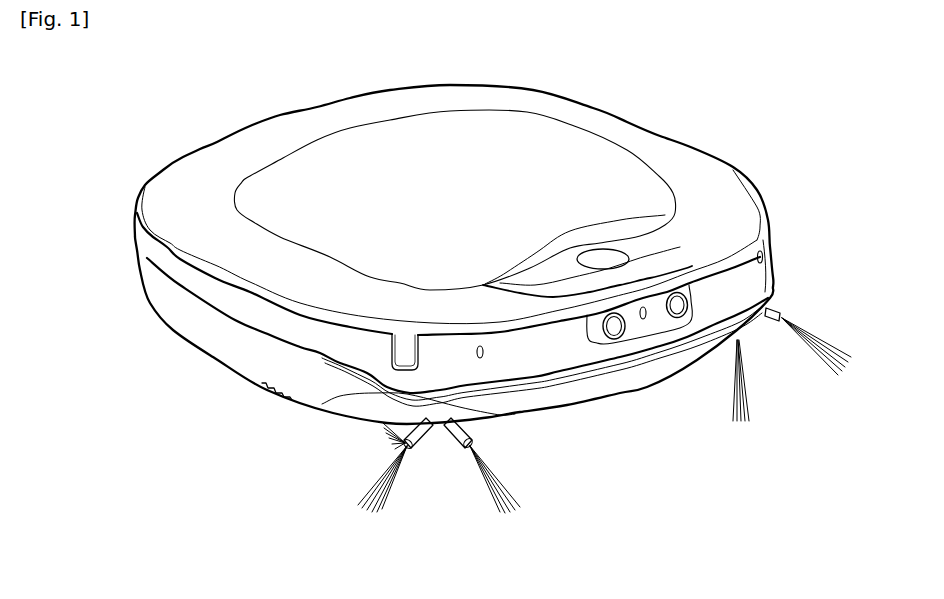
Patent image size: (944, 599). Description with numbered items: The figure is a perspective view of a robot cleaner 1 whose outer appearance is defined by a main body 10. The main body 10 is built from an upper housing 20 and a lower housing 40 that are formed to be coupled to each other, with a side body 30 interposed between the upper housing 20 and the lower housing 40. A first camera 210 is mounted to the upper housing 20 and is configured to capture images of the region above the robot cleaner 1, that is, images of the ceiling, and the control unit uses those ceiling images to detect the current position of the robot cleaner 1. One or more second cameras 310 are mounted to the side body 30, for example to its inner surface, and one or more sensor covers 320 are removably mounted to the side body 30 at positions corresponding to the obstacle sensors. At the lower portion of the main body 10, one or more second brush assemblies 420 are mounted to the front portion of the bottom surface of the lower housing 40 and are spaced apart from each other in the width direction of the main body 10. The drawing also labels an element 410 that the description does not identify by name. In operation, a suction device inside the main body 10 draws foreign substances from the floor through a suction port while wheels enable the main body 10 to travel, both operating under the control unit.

The robot cleaner 1 is at (780, 119).
The main body 10 is at (80, 192).
The upper housing 20 is at (170, 195).
The side body 30 is at (150, 258).
The lower housing 40 is at (157, 302).
The first camera 210 is at (613, 258).
The second cameras 310 is at (677, 309).
The sensor covers 320 is at (407, 358).
The charging terminals 410 is at (273, 399).
The second brush assemblies 420 is at (394, 482).